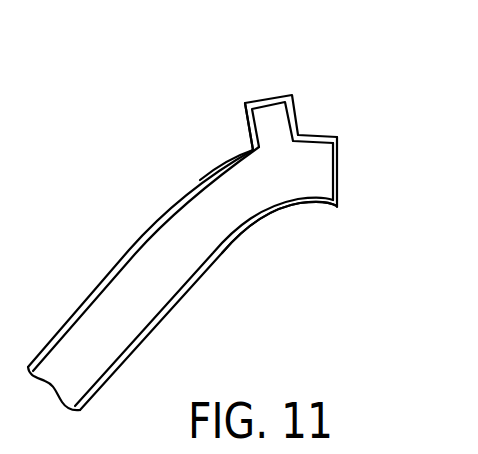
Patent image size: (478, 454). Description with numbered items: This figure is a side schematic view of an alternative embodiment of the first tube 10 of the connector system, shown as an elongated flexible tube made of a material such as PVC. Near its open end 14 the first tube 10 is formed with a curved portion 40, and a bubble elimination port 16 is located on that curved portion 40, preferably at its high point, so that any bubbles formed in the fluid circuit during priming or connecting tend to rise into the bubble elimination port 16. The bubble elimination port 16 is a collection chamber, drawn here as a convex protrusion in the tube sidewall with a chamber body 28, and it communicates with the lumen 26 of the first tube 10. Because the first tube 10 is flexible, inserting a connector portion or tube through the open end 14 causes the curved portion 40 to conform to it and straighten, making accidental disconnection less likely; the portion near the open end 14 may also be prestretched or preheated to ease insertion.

The first tube 10 is at (126, 254).
The open end 14 is at (326, 162).
The bubble elimination port 16 is at (290, 77).
The lumen 26 is at (270, 166).
The chamber body 28 is at (247, 128).
The curved portion 40 is at (335, 206).